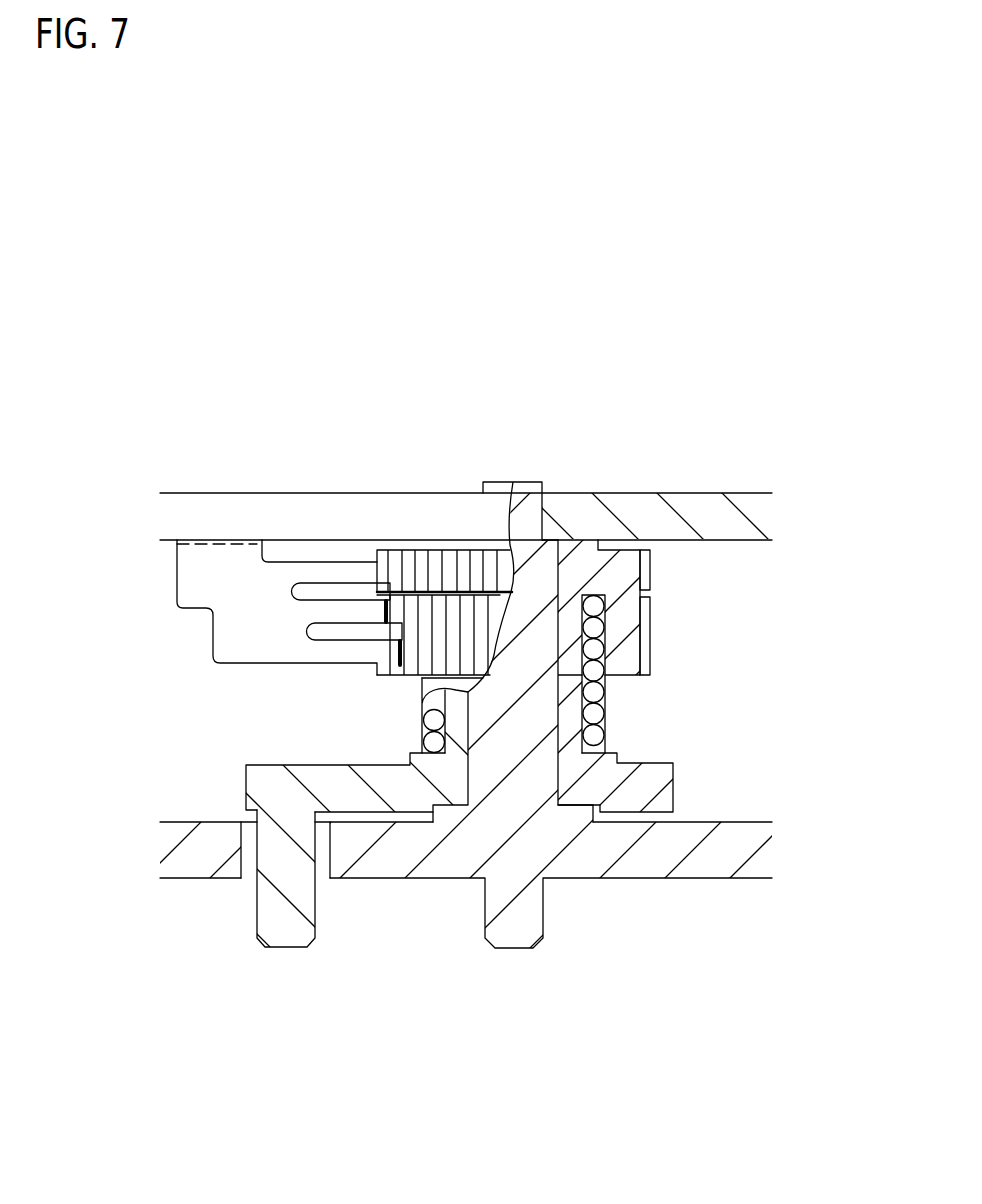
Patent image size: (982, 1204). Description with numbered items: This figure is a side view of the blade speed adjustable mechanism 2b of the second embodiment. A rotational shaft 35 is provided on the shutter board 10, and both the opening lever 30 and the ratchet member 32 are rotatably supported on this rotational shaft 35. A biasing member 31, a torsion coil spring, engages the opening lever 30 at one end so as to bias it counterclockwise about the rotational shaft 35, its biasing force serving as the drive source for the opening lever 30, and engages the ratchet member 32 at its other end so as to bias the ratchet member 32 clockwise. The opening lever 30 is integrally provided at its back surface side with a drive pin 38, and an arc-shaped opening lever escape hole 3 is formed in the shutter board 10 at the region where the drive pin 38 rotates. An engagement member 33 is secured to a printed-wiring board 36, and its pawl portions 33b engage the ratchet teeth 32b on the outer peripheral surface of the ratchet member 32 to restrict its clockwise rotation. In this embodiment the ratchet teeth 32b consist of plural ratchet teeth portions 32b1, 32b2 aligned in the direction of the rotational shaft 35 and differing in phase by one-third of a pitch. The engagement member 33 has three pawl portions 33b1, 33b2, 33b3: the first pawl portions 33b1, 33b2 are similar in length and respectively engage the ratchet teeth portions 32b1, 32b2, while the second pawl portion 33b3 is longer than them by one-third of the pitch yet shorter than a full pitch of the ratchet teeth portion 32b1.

The blade speed adjustable mechanism 2b is at (606, 445).
The opening lever escape hole 3 is at (243, 857).
The shutter board 10 is at (752, 860).
The opening lever 30 is at (340, 787).
The biasing member 31 is at (598, 720).
The ratchet member 32 is at (620, 570).
The ratchet teeth 32b is at (767, 607).
The ratchet teeth portion 32b1 is at (645, 573).
The ratchet teeth portion 32b2 is at (645, 640).
The engagement member 33 is at (215, 575).
The pawl portions 33b is at (258, 510).
The pawl portion 33b1 is at (358, 575).
The pawl portion 33b2 is at (345, 612).
The pawl portion 33b3 is at (327, 655).
The rotational shaft 35 is at (522, 493).
The printed-wiring board 36 is at (440, 505).
The drive pin 38 is at (283, 913).